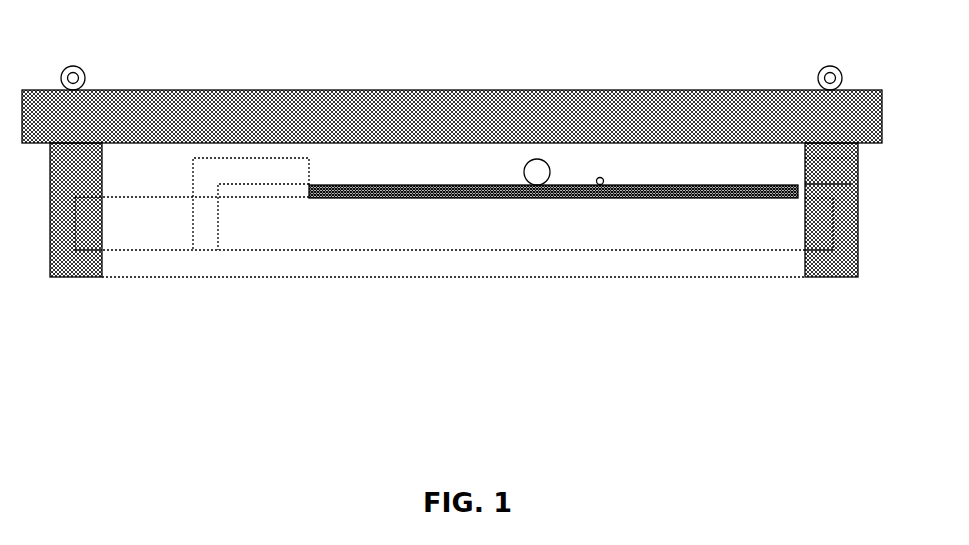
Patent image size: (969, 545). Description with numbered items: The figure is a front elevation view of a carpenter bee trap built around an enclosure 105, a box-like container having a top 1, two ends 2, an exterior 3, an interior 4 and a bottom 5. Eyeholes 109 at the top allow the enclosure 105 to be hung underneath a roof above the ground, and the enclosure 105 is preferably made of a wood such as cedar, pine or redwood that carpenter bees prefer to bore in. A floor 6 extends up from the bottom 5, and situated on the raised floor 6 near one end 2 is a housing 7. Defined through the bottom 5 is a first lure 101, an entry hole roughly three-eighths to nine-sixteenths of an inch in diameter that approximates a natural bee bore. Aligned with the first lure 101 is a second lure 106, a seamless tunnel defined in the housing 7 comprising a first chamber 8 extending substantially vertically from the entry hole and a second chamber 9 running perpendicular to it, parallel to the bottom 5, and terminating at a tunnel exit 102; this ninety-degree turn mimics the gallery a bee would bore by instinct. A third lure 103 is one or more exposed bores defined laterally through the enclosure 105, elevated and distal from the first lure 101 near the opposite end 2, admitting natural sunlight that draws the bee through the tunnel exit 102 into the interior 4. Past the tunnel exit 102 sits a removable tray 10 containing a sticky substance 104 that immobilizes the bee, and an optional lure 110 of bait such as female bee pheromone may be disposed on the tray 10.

The top 1 is at (452, 98).
The end 2 is at (467, 182).
The exterior 3 is at (859, 210).
The interior 4 is at (601, 119).
The bottom 5 is at (453, 285).
The floor 6 is at (453, 257).
The housing 7 is at (463, 237).
The first chamber 8 is at (234, 250).
The second chamber 9 is at (251, 151).
The tray 10 is at (553, 209).
The first lure 101 is at (454, 237).
The tunnel exit 102 is at (350, 177).
The third lure 103 is at (670, 211).
The sticky substance 104 is at (440, 173).
The enclosure 105 is at (192, 177).
The second lure 106 is at (303, 119).
The eyeholes 109 is at (451, 71).
The optional lure 110 is at (698, 172).